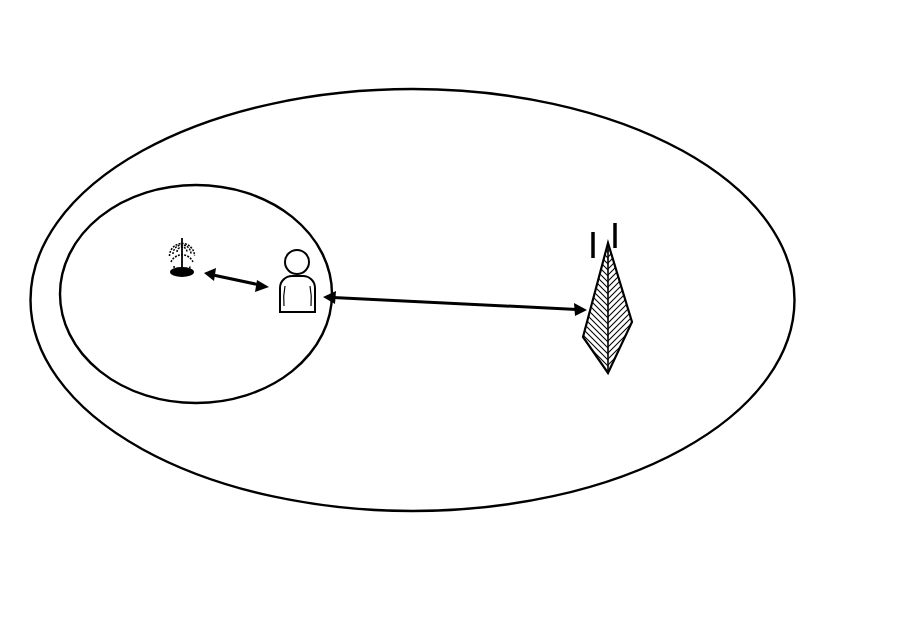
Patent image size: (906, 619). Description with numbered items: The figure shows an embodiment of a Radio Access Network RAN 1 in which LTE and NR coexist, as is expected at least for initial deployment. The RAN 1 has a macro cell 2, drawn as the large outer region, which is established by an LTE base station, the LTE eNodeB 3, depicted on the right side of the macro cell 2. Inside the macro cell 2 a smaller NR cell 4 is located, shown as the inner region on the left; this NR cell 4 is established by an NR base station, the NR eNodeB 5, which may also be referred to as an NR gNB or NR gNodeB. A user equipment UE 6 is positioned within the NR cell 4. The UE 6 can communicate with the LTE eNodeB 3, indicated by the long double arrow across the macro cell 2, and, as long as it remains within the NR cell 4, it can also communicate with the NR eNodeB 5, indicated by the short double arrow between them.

The radio access network 1 is at (527, 46).
The macro cell 2 is at (403, 89).
The LTE eNodeB 3 is at (617, 282).
The NR cell 4 is at (268, 200).
The NR eNodeB 5 is at (198, 242).
The user equipment 6 is at (306, 250).